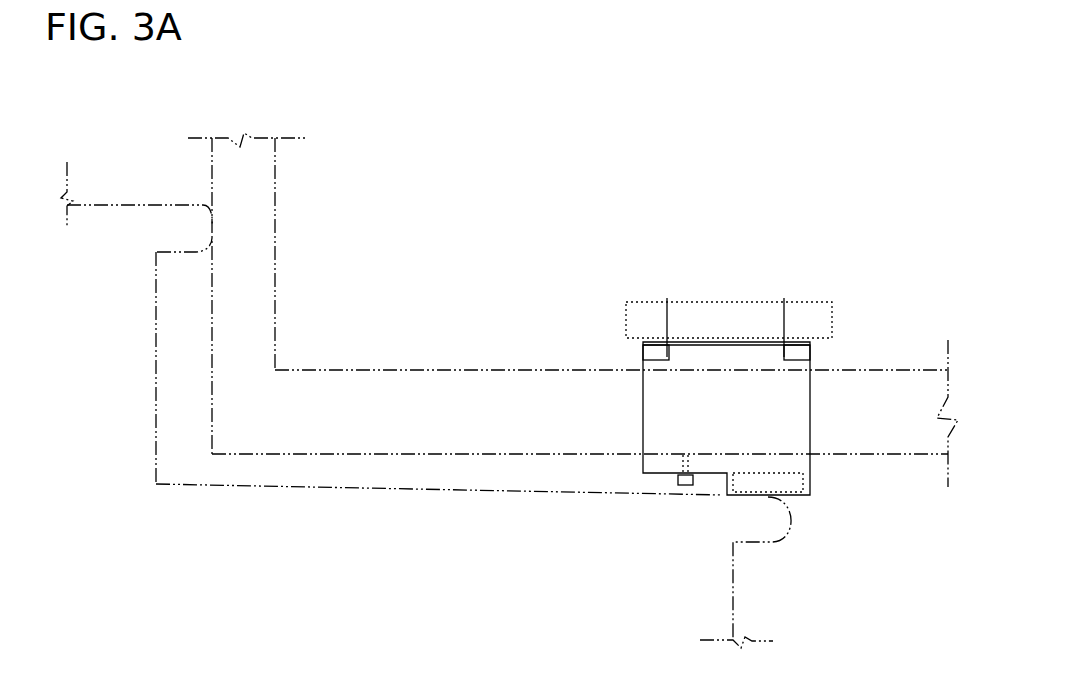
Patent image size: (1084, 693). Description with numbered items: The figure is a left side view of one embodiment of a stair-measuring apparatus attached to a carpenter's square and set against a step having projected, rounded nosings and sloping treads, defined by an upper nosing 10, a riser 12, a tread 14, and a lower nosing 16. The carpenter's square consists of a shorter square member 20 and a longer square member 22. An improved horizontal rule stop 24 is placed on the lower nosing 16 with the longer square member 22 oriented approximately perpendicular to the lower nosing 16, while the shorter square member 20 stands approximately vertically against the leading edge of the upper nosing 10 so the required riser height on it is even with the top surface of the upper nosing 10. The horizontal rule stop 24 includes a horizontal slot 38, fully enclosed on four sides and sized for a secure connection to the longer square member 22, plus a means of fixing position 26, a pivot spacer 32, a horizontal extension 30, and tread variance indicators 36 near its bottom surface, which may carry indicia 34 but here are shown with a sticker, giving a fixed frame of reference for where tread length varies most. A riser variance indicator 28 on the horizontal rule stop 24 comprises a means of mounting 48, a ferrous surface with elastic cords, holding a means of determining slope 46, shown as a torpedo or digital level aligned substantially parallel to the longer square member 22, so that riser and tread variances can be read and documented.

The upper nosing 10 is at (207, 215).
The riser 12 is at (156, 377).
The tread 14 is at (385, 488).
The lower nosing 16 is at (783, 505).
The shorter square member 20 is at (275, 325).
The longer square member 22 is at (385, 368).
The horizontal rule stop 24 is at (688, 185).
The means of fixing position 26 is at (643, 478).
The riser variance indicator 28 is at (775, 243).
The horizontal extension 30 is at (708, 403).
The pivot spacer 32 is at (810, 472).
The indicia 34 is at (768, 480).
The tread variance indicator 36 is at (815, 538).
The horizontal slot 38 is at (642, 412).
The means of determining slope 46 is at (740, 302).
The means of mounting 48 is at (785, 317).